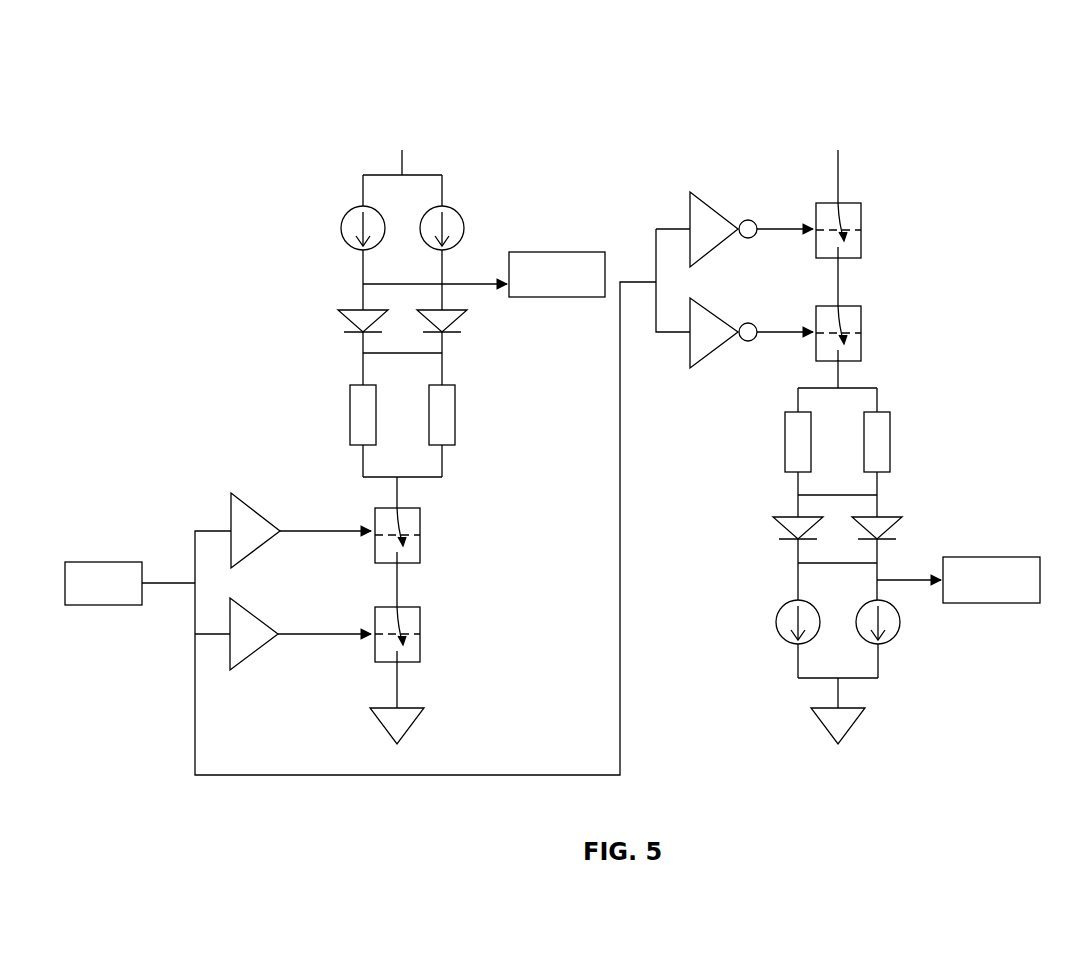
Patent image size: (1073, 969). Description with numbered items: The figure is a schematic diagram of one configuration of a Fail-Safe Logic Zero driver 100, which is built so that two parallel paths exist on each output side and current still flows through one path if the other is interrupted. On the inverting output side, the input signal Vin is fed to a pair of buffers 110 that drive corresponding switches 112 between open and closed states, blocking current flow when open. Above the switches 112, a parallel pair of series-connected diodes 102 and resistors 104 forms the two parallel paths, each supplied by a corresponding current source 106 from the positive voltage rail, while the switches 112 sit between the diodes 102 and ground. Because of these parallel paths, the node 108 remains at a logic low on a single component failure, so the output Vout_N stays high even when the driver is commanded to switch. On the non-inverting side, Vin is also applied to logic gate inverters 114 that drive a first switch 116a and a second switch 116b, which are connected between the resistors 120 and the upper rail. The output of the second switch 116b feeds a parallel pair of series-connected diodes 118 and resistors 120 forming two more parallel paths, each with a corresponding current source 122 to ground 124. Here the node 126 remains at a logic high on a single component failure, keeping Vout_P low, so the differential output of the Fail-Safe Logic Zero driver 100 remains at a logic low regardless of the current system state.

The Fail-Safe Logic 0 driver 100 is at (915, 99).
The diodes 102 is at (345, 318).
The resistors 104 is at (350, 402).
The current source 106 is at (351, 209).
The node 108 is at (360, 277).
The buffers 110 is at (231, 493).
The switches 112 is at (418, 518).
The logic gate inverters 114 is at (690, 192).
The switch 116a is at (860, 210).
The switch 116b is at (860, 315).
The diodes 118 is at (785, 517).
The resistors 120 is at (786, 428).
The current source 122 is at (789, 641).
The ground 124 is at (836, 745).
The node 126 is at (917, 576).